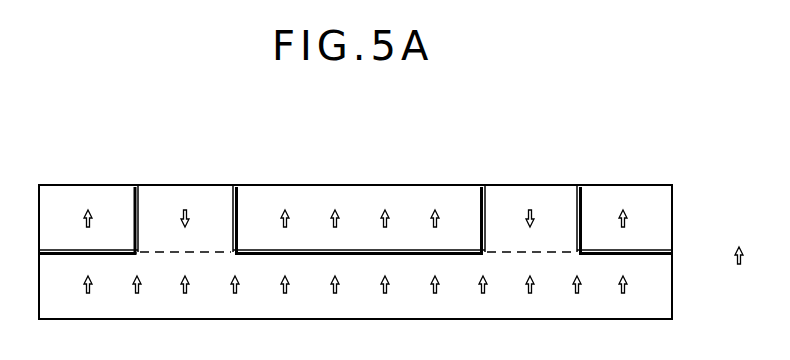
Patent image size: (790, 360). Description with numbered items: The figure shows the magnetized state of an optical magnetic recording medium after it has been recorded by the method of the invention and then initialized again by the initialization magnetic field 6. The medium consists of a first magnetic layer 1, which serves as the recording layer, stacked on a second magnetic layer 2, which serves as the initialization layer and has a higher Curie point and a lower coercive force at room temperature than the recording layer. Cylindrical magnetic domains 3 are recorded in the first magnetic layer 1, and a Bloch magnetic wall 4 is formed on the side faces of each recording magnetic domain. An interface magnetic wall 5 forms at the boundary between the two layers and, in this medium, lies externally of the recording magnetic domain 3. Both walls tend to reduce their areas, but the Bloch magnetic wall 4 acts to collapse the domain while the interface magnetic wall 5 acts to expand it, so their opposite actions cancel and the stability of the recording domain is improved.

The first magnetic layer 1 is at (672, 224).
The second magnetic layer 2 is at (672, 295).
The cylindrical magnetic domain 3 is at (186, 205).
The Bloch magnetic wall 4 is at (133, 203).
The interface magnetic wall 5 is at (60, 256).
The initialization magnetic field 6 is at (752, 255).